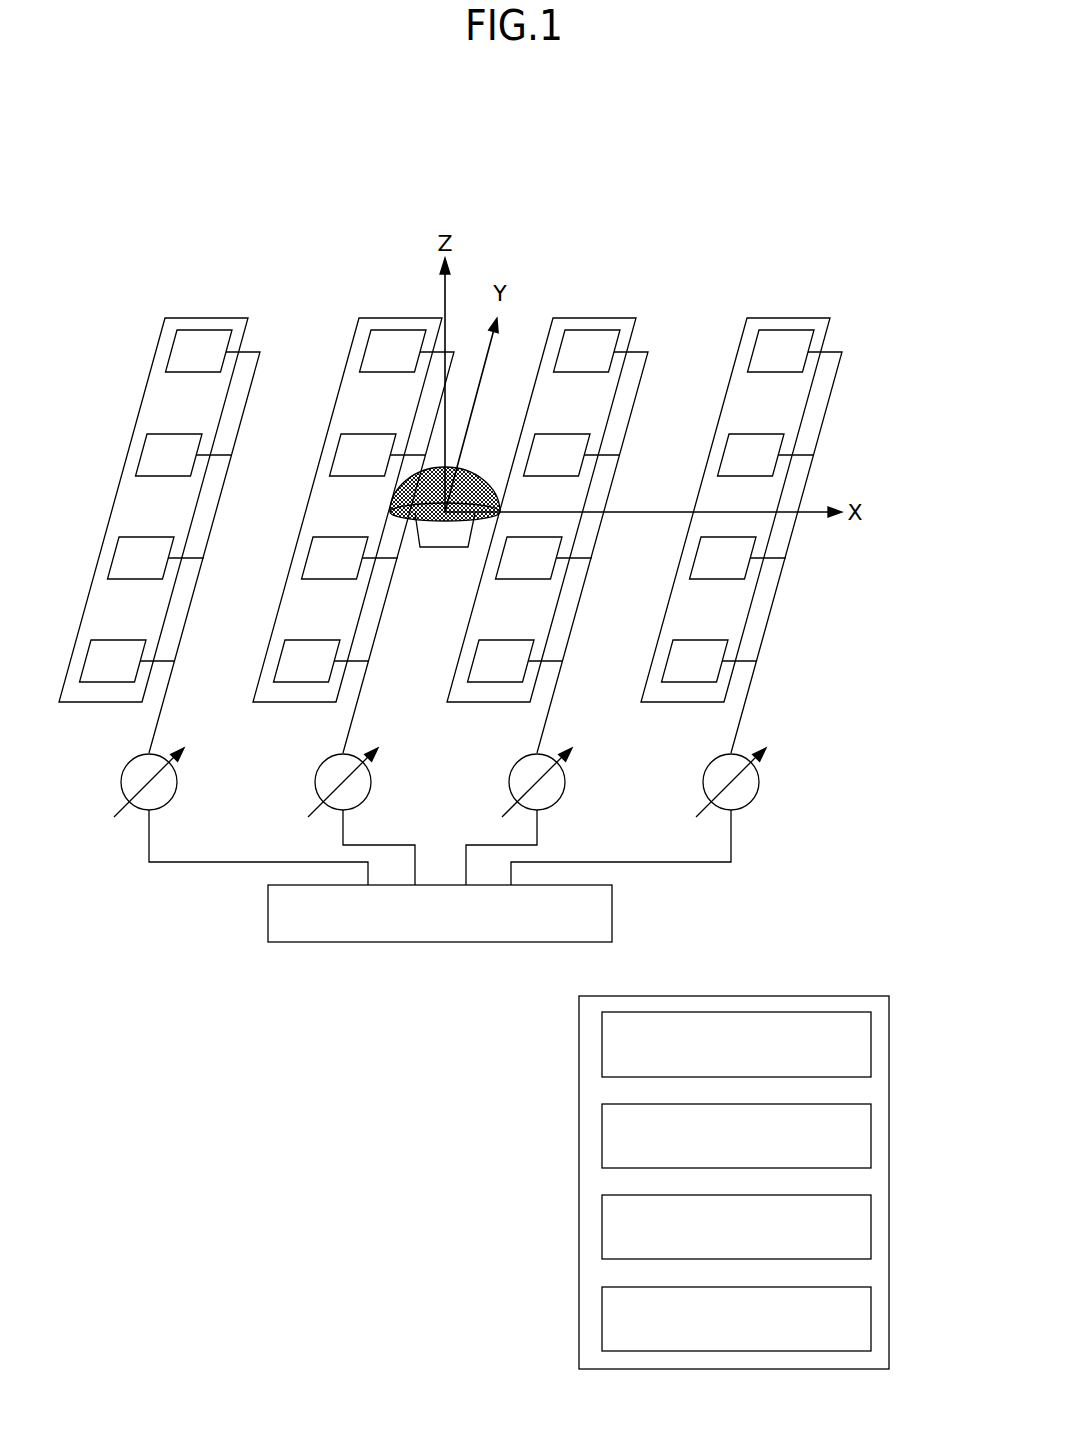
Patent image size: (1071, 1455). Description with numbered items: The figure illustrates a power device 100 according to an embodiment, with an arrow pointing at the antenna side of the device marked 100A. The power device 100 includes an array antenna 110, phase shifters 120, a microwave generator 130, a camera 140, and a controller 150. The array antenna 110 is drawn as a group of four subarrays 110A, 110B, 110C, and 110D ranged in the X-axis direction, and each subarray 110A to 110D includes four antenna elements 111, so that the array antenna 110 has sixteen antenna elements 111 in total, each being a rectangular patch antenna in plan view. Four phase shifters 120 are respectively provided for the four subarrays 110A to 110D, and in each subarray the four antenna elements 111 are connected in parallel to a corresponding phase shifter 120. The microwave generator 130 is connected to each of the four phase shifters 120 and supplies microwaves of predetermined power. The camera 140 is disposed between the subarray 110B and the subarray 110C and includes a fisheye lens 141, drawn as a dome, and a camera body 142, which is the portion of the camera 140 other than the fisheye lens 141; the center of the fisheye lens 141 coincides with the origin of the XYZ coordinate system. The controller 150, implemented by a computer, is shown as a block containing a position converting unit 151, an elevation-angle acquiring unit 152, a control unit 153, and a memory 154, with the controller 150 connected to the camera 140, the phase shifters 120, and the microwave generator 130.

The power device 100 is at (972, 137).
The antenna surface of the apparatus 100A is at (875, 280).
The array antenna 110 is at (185, 200).
The subarray 110A is at (217, 318).
The subarray 110B is at (397, 318).
The subarray 110C is at (585, 318).
The subarray 110D is at (802, 318).
The antenna element 111 is at (188, 330).
The phase shifter 120 is at (125, 757).
The microwave generator 130 is at (443, 942).
The camera 140 is at (249, 310).
The fisheye lens 141 is at (400, 484).
The camera body 142 is at (417, 530).
The controller 150 is at (178, 782).
The position converting unit 151 is at (871, 1045).
The elevation-angle acquiring unit 152 is at (871, 1137).
The control unit 153 is at (871, 1228).
The memory 154 is at (871, 1320).